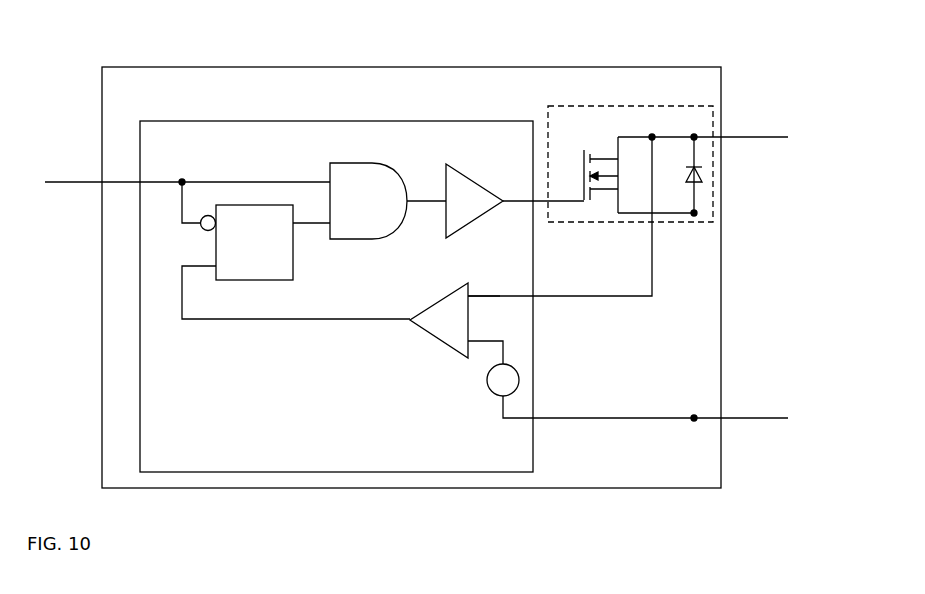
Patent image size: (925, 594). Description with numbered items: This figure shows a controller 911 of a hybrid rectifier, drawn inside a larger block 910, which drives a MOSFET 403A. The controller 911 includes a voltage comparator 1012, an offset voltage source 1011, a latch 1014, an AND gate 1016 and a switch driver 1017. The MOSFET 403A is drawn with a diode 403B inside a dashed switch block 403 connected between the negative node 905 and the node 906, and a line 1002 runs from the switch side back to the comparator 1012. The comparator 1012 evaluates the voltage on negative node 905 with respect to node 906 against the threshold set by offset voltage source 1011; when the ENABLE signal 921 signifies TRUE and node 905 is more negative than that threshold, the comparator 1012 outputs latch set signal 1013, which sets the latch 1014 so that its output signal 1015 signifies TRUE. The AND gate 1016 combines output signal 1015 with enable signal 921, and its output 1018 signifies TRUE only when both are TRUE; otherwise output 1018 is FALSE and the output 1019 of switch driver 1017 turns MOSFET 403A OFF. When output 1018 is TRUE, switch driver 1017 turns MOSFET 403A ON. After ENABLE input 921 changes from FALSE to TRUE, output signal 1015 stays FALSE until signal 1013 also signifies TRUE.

The control circuit 910 is at (282, 61).
The controller 911 is at (217, 114).
The enable signal 921 is at (77, 192).
The latch 1014 is at (237, 231).
The output signal of latch 1015 is at (310, 228).
The AND gate 1016 is at (368, 201).
The switch driver 1017 is at (474, 201).
The output of AND gate 1018 is at (418, 197).
The output of switch driver 1019 is at (520, 197).
The switch 403 is at (617, 229).
The MOSFET 403A is at (587, 174).
The diode 403B is at (660, 176).
The negative node 905 is at (755, 133).
The node 906 is at (755, 413).
The sense line 1002 is at (547, 298).
The voltage comparator 1012 is at (430, 295).
The latch set signal 1013 is at (395, 327).
The offset voltage source 1011 is at (478, 382).